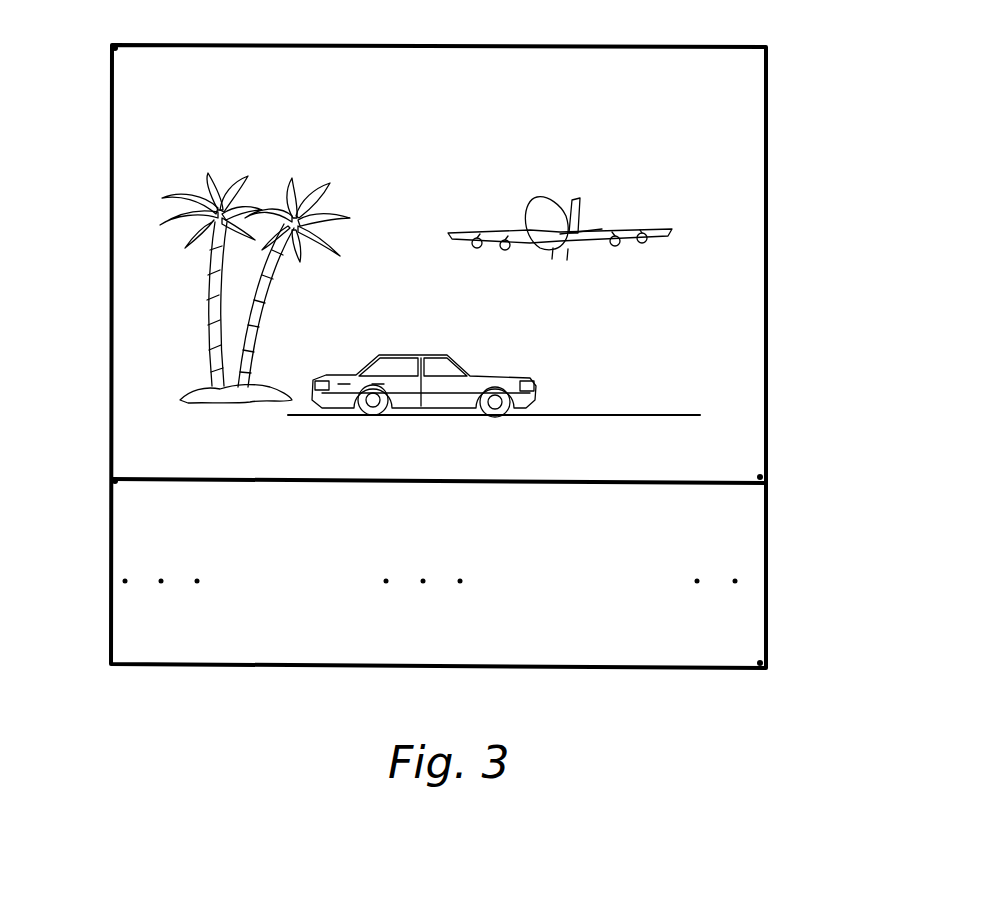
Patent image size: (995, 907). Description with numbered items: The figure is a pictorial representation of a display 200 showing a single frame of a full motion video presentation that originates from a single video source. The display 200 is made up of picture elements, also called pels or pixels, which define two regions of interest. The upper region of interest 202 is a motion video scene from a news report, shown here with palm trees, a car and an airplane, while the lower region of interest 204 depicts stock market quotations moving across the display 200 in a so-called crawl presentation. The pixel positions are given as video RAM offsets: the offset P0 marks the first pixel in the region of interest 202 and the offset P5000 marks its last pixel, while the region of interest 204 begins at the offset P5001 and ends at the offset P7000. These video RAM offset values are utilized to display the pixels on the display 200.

The display 200 is at (836, 36).
The region of interest 202 is at (748, 157).
The region of interest 204 is at (748, 540).
The video RAM offset P0 is at (115, 46).
The video RAM offset P5000 is at (760, 476).
The video RAM offset P5001 is at (115, 483).
The video RAM offset P7000 is at (760, 662).